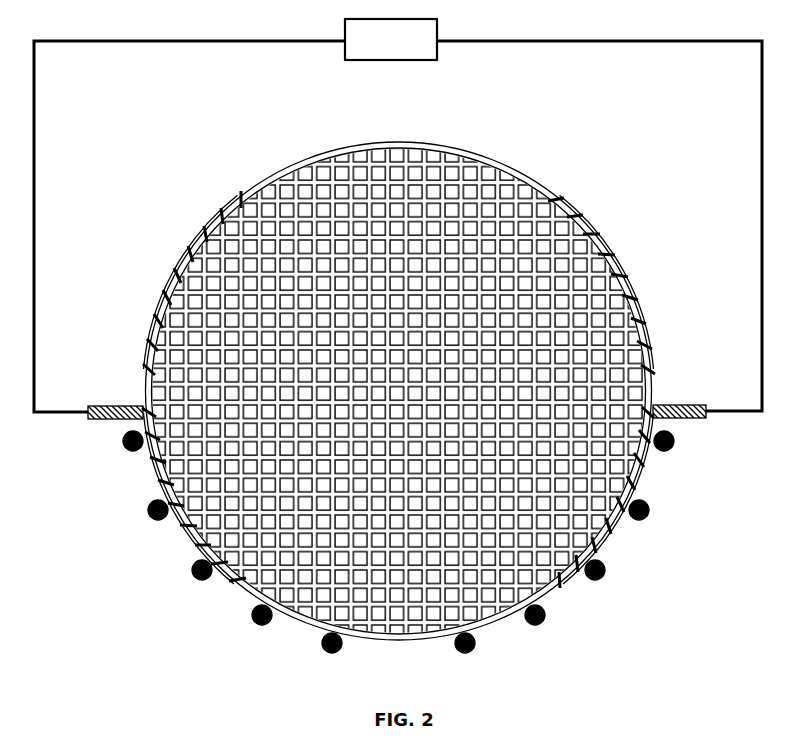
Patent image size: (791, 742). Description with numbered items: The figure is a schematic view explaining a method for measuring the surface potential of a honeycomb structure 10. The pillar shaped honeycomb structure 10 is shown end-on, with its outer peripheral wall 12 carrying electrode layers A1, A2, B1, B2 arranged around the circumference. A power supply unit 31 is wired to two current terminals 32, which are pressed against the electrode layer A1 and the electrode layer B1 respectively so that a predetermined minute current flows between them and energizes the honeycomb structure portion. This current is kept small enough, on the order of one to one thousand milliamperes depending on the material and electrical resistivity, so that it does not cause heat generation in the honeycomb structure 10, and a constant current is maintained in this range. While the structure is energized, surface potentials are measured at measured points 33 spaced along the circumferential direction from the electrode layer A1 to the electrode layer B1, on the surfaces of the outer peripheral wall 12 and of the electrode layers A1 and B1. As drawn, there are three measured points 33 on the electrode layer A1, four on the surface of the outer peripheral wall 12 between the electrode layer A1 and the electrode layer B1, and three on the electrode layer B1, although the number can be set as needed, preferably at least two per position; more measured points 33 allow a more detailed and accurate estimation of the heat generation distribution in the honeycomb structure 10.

The honeycomb structure 10 is at (506, 159).
The outer peripheral wall 12 is at (278, 180).
The power supply unit 31 is at (391, 39).
The current terminals 32 is at (140, 406).
The measured points 33 is at (122, 446).
The electrode layer A1 is at (222, 586).
The electrode layer A2 is at (212, 222).
The electrode layer B1 is at (574, 586).
The electrode layer B2 is at (588, 214).